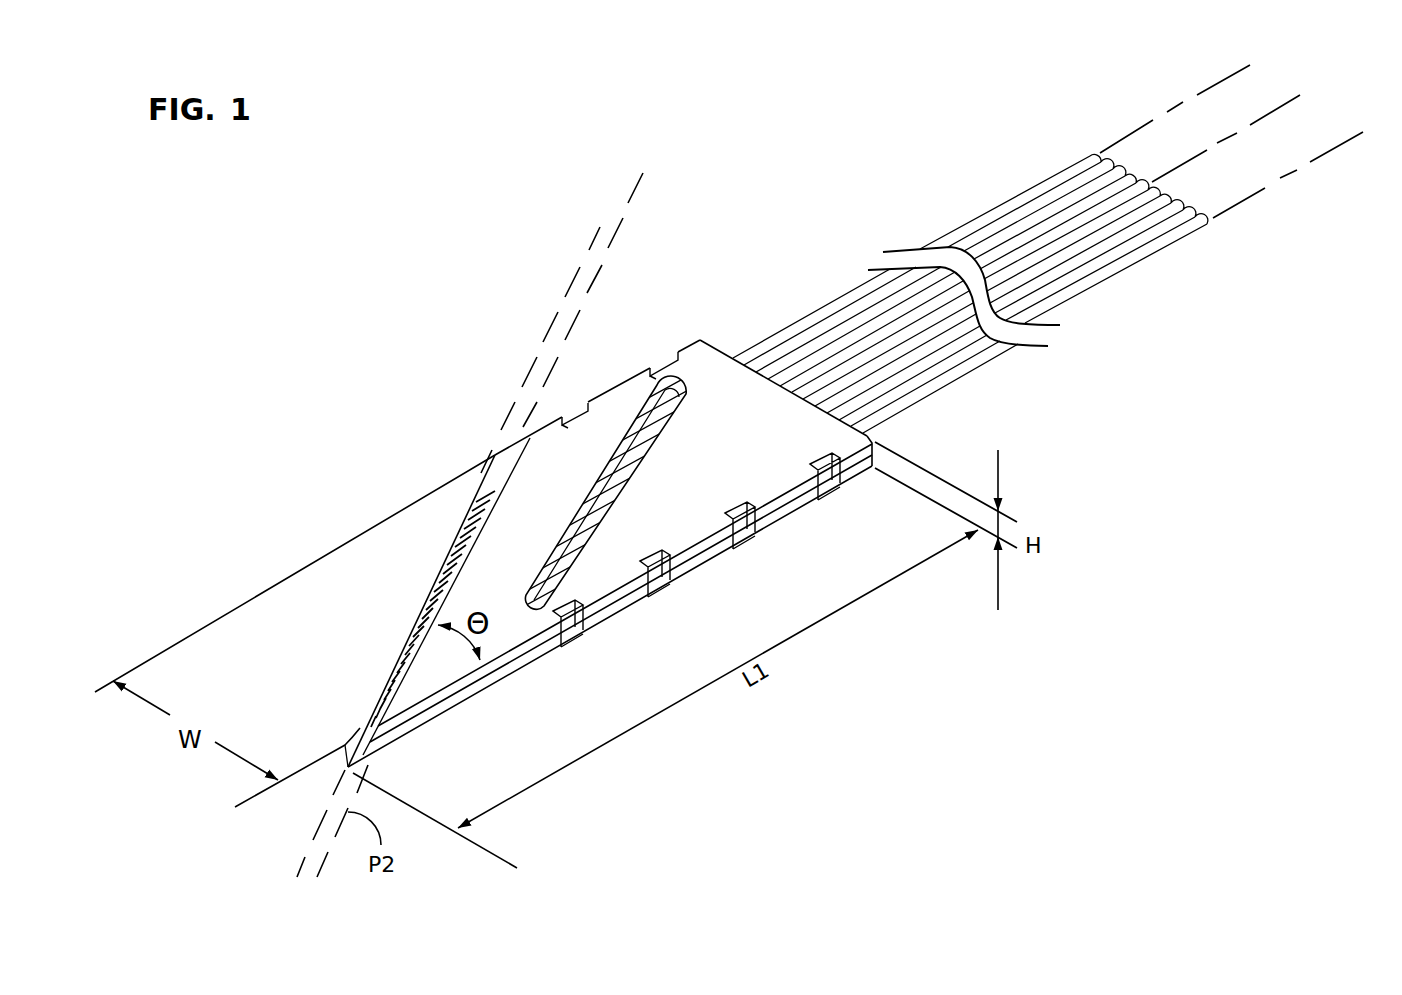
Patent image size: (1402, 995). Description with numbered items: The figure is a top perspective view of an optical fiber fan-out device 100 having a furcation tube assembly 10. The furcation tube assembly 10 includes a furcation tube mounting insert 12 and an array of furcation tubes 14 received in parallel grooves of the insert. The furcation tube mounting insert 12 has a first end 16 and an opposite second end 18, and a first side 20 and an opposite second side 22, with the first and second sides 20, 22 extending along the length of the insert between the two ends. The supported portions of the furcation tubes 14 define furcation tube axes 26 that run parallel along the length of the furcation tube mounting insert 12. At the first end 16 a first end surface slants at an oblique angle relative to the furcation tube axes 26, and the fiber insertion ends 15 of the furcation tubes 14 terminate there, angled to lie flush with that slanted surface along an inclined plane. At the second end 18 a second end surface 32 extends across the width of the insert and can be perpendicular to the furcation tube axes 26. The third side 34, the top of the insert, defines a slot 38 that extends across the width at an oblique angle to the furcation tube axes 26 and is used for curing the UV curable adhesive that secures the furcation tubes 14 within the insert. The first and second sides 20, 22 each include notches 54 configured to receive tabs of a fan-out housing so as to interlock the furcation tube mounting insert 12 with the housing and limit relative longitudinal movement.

The furcation tube assembly 10 is at (842, 160).
The furcation tube mounting insert 12 is at (530, 433).
The furcation tubes 14 is at (388, 673).
The fiber insertion ends 15 is at (445, 560).
The first end 16 is at (347, 748).
The second end 18 is at (867, 436).
The first side 20 is at (537, 657).
The second side 22 is at (685, 345).
The furcation tube axes 26 is at (1212, 85).
The second end surface 32 is at (725, 342).
The third side 34 is at (472, 577).
The slot 38 is at (562, 520).
The notches 54 is at (576, 416).
The optical fiber fan-out device 100 is at (1317, 100).